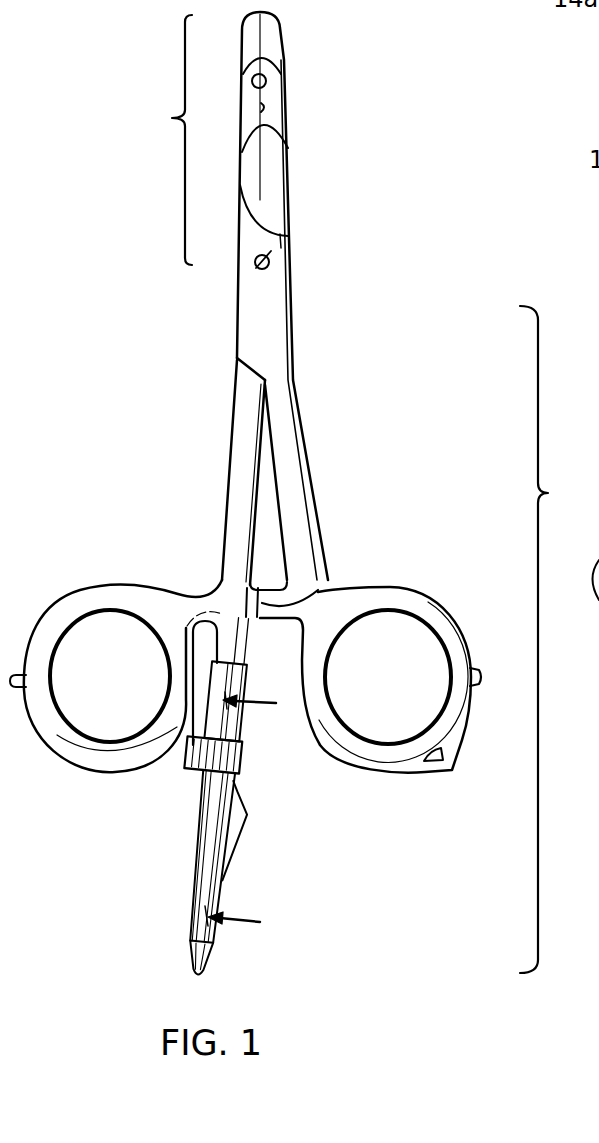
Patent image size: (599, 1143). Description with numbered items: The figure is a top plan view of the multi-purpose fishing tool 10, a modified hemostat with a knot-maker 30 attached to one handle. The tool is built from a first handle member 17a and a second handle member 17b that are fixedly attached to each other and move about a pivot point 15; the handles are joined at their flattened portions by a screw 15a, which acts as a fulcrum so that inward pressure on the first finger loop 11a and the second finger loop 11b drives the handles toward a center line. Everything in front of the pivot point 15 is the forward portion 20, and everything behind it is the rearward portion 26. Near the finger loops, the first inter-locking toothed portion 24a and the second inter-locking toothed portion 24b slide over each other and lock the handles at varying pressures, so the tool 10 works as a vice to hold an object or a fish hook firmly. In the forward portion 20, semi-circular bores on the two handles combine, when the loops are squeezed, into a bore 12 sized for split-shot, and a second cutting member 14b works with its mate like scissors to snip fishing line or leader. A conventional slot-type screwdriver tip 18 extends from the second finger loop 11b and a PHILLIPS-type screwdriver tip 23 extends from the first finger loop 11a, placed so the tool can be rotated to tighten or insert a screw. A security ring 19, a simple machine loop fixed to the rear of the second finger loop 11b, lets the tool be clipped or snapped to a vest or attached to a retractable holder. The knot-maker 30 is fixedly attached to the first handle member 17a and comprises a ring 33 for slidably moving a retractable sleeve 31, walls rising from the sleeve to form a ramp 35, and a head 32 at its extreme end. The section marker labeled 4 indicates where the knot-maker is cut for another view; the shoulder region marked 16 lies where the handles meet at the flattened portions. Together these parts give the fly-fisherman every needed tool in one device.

The multi-purpose fishing tool 10 is at (212, 333).
The bore 12 is at (267, 81).
The second cutting member 14b is at (272, 162).
The pivot point 15 is at (268, 258).
The screw 15a is at (270, 266).
The shaft 16 is at (260, 342).
The first handle member 17a is at (232, 477).
The second handle member 17b is at (294, 473).
The forward portion 20 is at (156, 140).
The first inter-locking toothed portion 24a is at (223, 578).
The second inter-locking toothed portion 24b is at (323, 583).
The first finger loop 11a is at (92, 598).
The second finger loop 11b is at (445, 623).
The slot-type screwdriver tip 18 is at (482, 677).
The security ring 19 is at (450, 763).
The PHILLIPS-type screwdriver tip 23 is at (20, 690).
The rearward portion 26 is at (554, 639).
The knot-maker 30 is at (176, 858).
The retractable sleeve 31 is at (230, 783).
The ring 33 is at (250, 757).
The ramp 35 is at (230, 843).
The head 32 is at (207, 957).
The section line for FIG. 4 is at (240, 795).